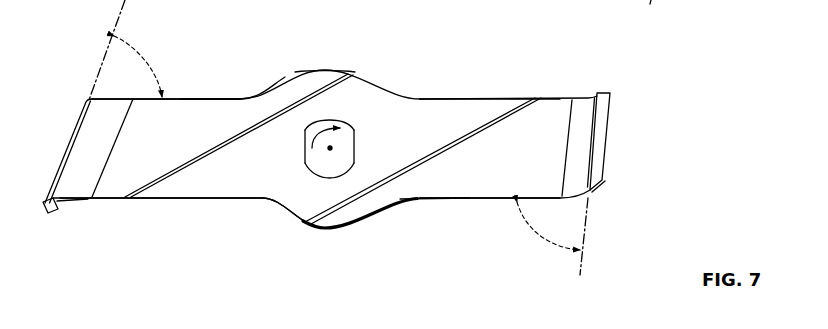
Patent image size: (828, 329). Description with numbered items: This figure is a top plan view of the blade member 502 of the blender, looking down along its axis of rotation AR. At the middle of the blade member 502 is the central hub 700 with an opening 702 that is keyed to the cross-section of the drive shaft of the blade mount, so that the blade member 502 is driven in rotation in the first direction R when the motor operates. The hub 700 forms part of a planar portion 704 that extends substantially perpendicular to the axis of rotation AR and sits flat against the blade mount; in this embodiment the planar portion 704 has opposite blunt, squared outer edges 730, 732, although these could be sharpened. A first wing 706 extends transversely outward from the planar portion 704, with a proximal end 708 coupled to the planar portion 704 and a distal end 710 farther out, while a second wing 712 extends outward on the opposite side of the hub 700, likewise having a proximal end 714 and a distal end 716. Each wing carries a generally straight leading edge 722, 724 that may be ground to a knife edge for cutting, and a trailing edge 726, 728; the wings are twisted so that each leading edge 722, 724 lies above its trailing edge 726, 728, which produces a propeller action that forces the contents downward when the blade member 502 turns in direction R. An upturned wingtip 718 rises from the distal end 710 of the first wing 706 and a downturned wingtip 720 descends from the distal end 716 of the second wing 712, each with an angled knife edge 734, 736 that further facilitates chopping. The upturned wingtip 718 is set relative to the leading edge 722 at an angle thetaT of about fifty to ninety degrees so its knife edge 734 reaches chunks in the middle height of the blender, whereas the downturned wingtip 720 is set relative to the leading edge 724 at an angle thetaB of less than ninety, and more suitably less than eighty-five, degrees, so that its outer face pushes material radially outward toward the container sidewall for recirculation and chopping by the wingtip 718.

The blade member 502 is at (238, 99).
The central hub 700 is at (372, 113).
The opening 702 is at (340, 121).
The planar portion 704 is at (290, 202).
The first wing 706 is at (469, 188).
The proximal end of first wing 708 is at (377, 215).
The distal end of first wing 710 is at (561, 199).
The second wing 712 is at (182, 113).
The proximal end of second wing 714 is at (268, 91).
The distal end of second wing 716 is at (133, 99).
The upturned wingtip 718 is at (610, 105).
The downturned wingtip 720 is at (56, 212).
The leading edge of first wing 722 is at (447, 199).
The leading edge of second wing 724 is at (211, 99).
The trailing edge of first wing 726 is at (448, 99).
The trailing edge of second wing 728 is at (200, 199).
The outer edge of planar portion 730 is at (328, 228).
The outer edge of planar portion 732 is at (324, 70).
The knife edge of first wingtip 734 is at (598, 190).
The knife edge of second wingtip 736 is at (96, 99).
The first direction of rotation R is at (312, 144).
The axis of rotation AR is at (331, 148).
The angle of downturned wingtip thetaB is at (145, 66).
The angle of upturned wingtip thetaT is at (545, 232).